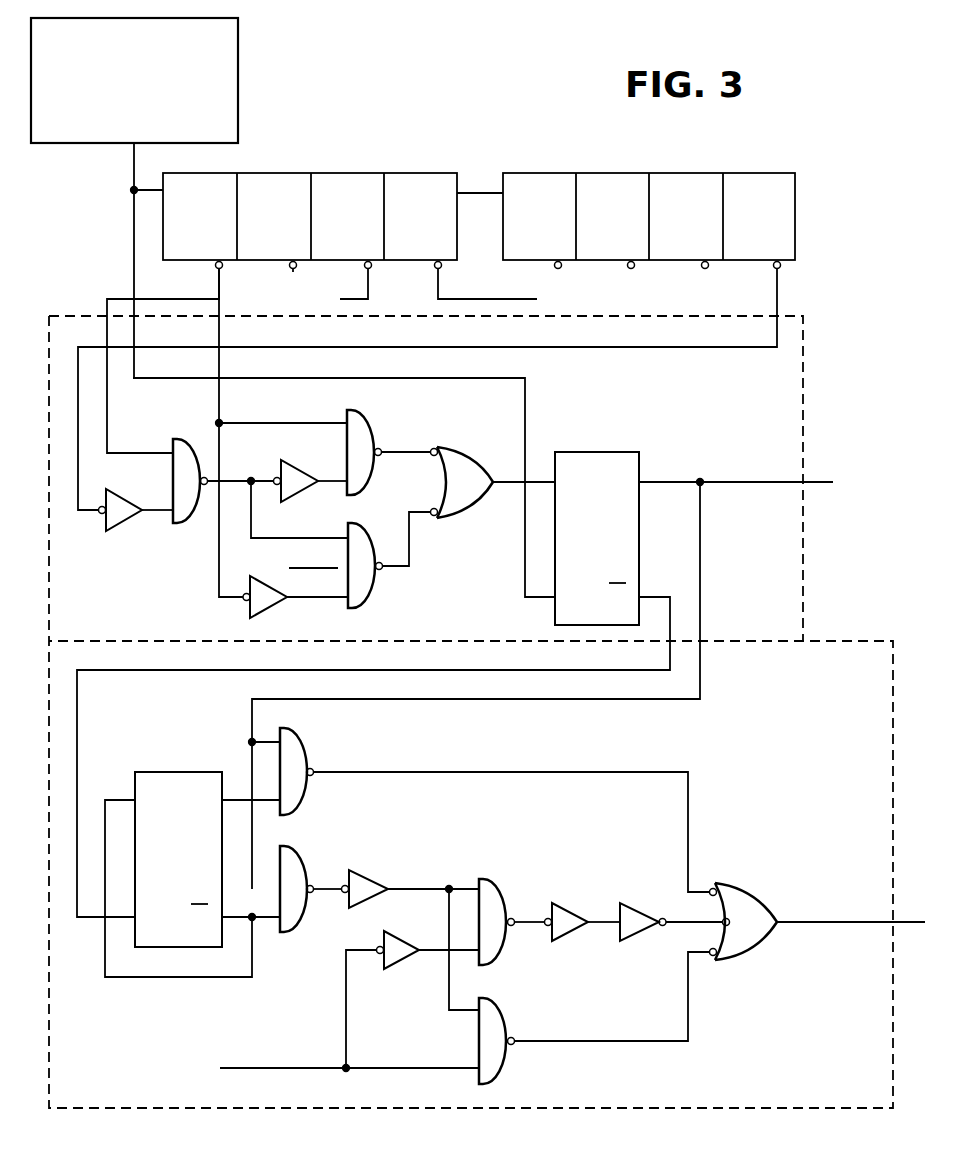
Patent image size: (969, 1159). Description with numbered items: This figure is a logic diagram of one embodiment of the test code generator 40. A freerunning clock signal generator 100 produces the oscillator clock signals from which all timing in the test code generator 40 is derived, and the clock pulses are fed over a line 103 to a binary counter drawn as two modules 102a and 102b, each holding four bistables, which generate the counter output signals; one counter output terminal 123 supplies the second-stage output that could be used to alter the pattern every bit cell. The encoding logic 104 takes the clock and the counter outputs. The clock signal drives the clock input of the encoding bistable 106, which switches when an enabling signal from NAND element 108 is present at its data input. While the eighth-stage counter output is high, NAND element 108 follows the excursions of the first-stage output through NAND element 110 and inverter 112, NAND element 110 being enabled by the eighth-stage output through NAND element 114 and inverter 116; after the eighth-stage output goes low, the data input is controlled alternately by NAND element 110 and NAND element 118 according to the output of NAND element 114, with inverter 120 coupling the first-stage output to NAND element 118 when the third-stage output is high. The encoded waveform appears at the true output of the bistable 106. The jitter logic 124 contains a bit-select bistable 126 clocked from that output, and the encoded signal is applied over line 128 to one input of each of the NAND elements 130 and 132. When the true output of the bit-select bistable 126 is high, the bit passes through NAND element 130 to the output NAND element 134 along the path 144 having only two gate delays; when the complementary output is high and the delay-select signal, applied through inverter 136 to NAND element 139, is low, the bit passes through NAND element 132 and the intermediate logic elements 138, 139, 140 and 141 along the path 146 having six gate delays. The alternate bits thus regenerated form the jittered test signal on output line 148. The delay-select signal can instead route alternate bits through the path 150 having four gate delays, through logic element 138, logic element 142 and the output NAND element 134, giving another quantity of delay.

The test code generator 40 is at (492, 115).
The clock signal generator 100 is at (230, 75).
The binary counter module 102a is at (320, 173).
The binary counter module 102b is at (590, 173).
The line 103 is at (145, 190).
The MFM encoding logic 104 is at (803, 567).
The MFM bistable 106 is at (555, 603).
The NAND element 108 is at (467, 453).
The NAND element 110 is at (362, 585).
The inverter 112 is at (267, 602).
The NAND element 114 is at (193, 497).
The inverter 116 is at (109, 525).
The NAND element 118 is at (353, 428).
The inverter 120 is at (288, 492).
The terminal 123 is at (294, 269).
The jitter logic 124 is at (893, 738).
The bit-select bistable 126 is at (202, 770).
The line 128 is at (703, 683).
The NAND element 130 is at (293, 750).
The NAND element 132 is at (287, 863).
The output NAND element 134 is at (745, 900).
The inverter 136 is at (408, 952).
The logic element 138 is at (367, 902).
The NAND element 139 is at (492, 903).
The logic element 140 is at (564, 921).
The logic element 141 is at (633, 915).
The logic element 142 is at (489, 1020).
The path 144 is at (688, 812).
The path 146 is at (700, 923).
The output line 148 is at (876, 928).
The path 150 is at (688, 1027).